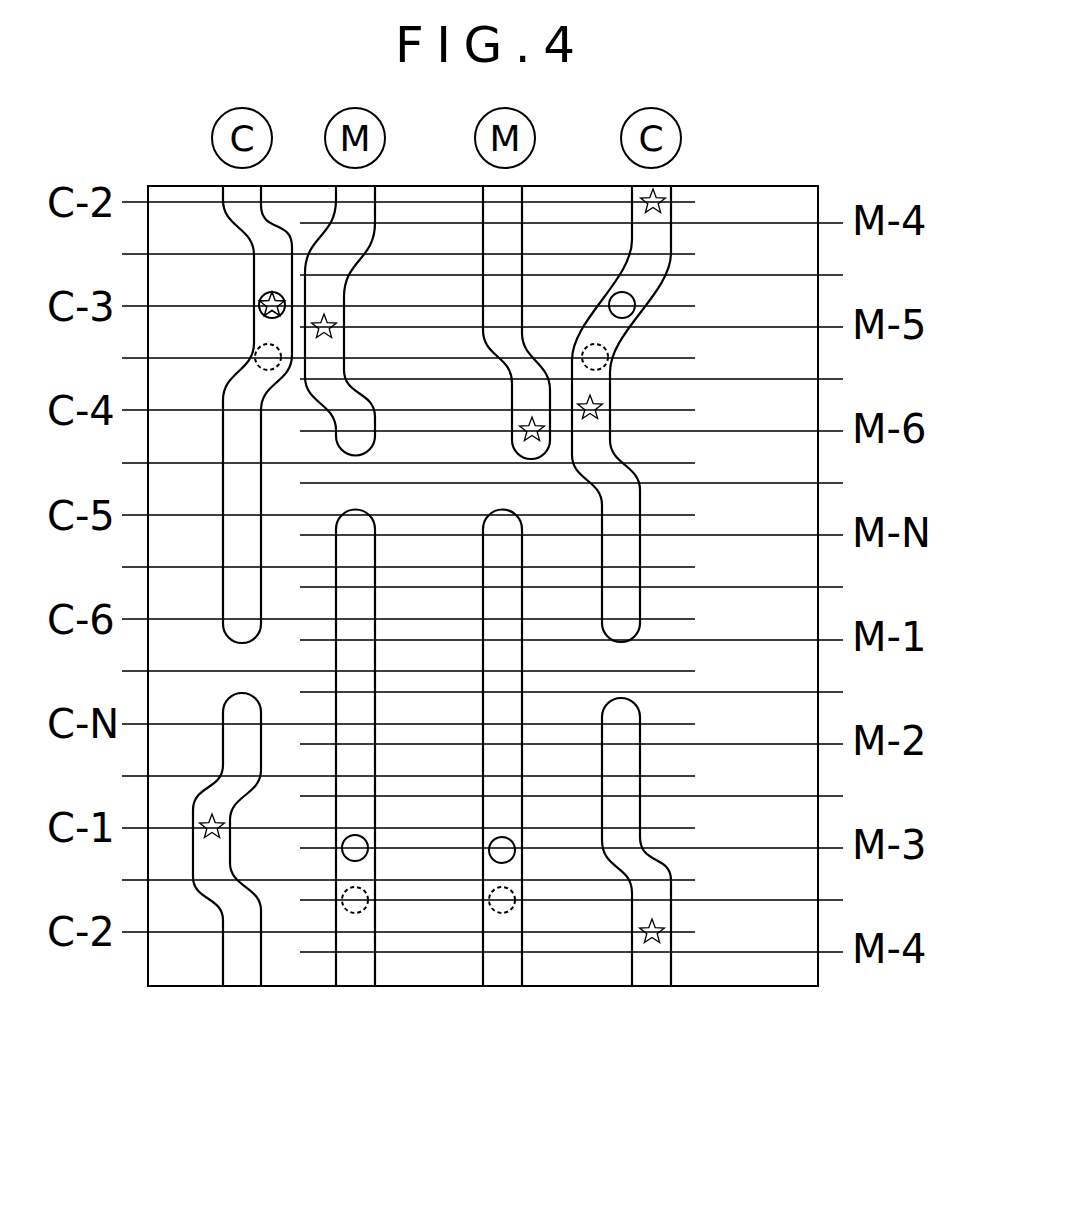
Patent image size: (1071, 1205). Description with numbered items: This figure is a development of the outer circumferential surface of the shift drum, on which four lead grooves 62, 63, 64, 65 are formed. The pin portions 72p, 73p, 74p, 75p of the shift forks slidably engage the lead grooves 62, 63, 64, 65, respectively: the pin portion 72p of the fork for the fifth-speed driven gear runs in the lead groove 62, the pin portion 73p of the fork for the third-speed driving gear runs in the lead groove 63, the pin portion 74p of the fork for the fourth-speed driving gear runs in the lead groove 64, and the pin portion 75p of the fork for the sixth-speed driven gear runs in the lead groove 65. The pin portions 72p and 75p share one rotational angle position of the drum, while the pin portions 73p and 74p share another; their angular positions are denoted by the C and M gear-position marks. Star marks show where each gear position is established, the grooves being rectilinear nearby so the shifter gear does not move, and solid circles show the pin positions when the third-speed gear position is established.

The lead groove 62 is at (242, 962).
The lead groove 63 is at (355, 962).
The lead groove 64 is at (503, 962).
The lead groove 65 is at (652, 962).
The pin portion 72p is at (255, 347).
The pin portion 73p is at (365, 857).
The pin portion 74p is at (517, 853).
The pin portion 75p is at (603, 348).